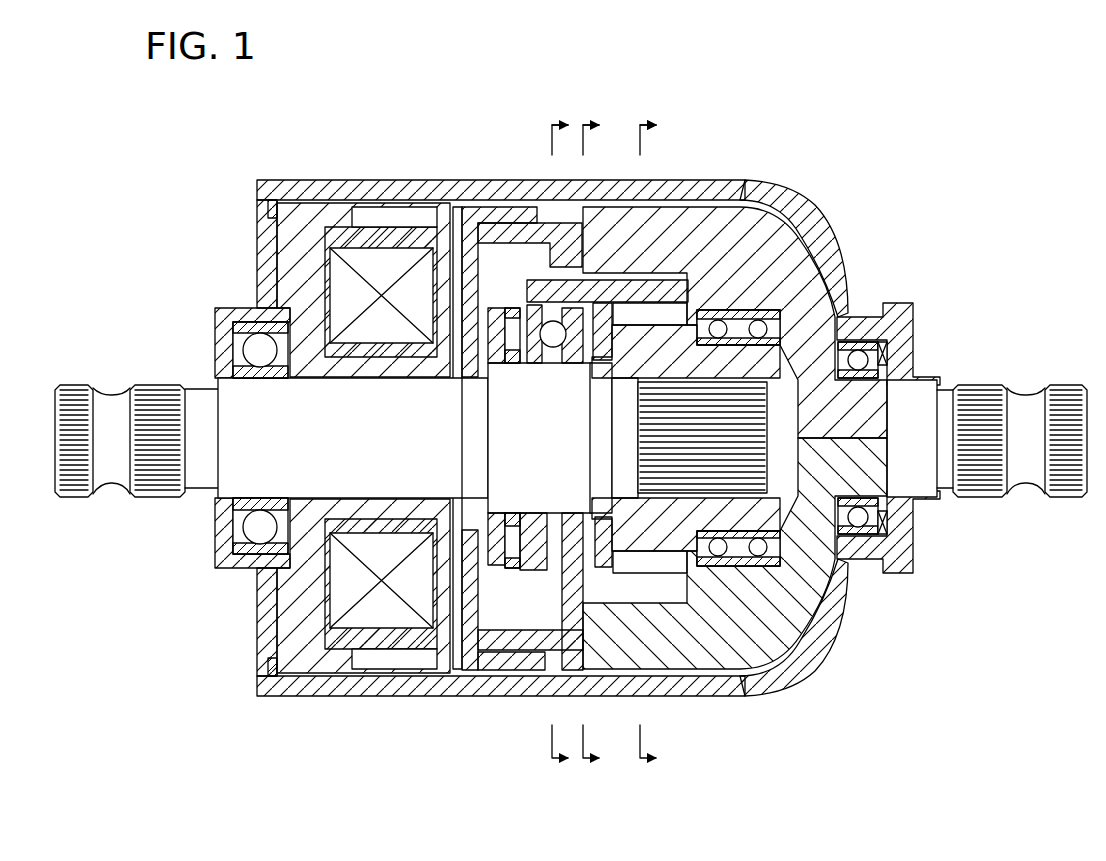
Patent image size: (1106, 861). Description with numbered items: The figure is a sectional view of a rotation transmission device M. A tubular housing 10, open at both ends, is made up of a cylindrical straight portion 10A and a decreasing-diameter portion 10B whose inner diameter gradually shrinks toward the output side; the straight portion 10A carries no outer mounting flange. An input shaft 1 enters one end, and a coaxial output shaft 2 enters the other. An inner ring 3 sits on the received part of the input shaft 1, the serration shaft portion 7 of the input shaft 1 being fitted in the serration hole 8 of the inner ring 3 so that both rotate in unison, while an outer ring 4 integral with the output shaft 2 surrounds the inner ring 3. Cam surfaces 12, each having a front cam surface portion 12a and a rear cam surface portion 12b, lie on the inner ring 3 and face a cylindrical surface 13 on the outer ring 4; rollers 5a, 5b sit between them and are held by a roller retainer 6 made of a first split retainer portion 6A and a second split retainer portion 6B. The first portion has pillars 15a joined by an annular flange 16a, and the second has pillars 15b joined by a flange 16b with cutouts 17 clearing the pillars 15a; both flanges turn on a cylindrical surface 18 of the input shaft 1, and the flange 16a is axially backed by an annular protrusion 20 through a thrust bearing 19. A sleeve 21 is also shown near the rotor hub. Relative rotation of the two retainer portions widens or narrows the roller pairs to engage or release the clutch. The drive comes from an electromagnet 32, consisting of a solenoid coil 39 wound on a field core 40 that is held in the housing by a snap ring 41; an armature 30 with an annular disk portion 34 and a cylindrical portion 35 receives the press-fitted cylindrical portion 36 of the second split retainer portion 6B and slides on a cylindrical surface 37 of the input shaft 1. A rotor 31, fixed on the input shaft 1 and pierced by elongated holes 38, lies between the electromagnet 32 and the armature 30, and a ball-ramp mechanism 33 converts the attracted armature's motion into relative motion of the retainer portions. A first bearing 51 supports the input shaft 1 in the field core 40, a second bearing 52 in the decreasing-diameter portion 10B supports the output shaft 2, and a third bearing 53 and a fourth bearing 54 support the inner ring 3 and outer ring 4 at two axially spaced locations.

The rotation transmission device M is at (254, 181).
The input shaft 1 is at (112, 393).
The output shaft 2 is at (1023, 393).
The inner ring 3 is at (870, 303).
The outer ring 4 is at (697, 250).
The rollers 5a is at (790, 208).
The rollers 5b is at (682, 612).
The roller retainer 6 is at (563, 218).
The first split retainer portion 6A is at (600, 280).
The second split retainer portion 6B is at (576, 600).
The serration shaft portion 7 is at (748, 440).
The serration hole 8 is at (900, 570).
The housing 10 is at (372, 697).
The cylindrical straight portion 10A is at (320, 690).
The decreasing-diameter portion 10B is at (848, 582).
The cam surfaces 12 is at (826, 485).
The front cam surface portion 12a is at (742, 330).
The rear cam surface portion 12b is at (705, 648).
The cylindrical surface 13 is at (710, 306).
The pillars 15a is at (644, 289).
The pillars 15b is at (650, 571).
The annular flange 16a is at (535, 528).
The annular flange 16b is at (573, 517).
The cutouts 17 is at (556, 262).
The cylindrical surface 18 is at (537, 516).
The thrust bearing 19 is at (512, 364).
The annular protrusion 20 is at (472, 404).
The sleeve 21 is at (601, 366).
The armature 30 is at (487, 212).
The rotor 31 is at (394, 207).
The electromagnet 32 is at (333, 208).
The ball-ramp mechanism 33 is at (553, 350).
The annular disk portion 34 is at (468, 618).
The cylindrical portion 35 is at (503, 651).
The cylindrical portion 36 is at (537, 668).
The cylindrical surface 37 is at (460, 540).
The elongated holes 38 is at (430, 612).
The solenoid coil 39 is at (337, 596).
The field core 40 is at (282, 629).
The snap ring 41 is at (268, 667).
The first bearing 51 is at (246, 527).
The second bearing 52 is at (893, 346).
The third bearing 53 is at (760, 655).
The fourth bearing 54 is at (780, 600).